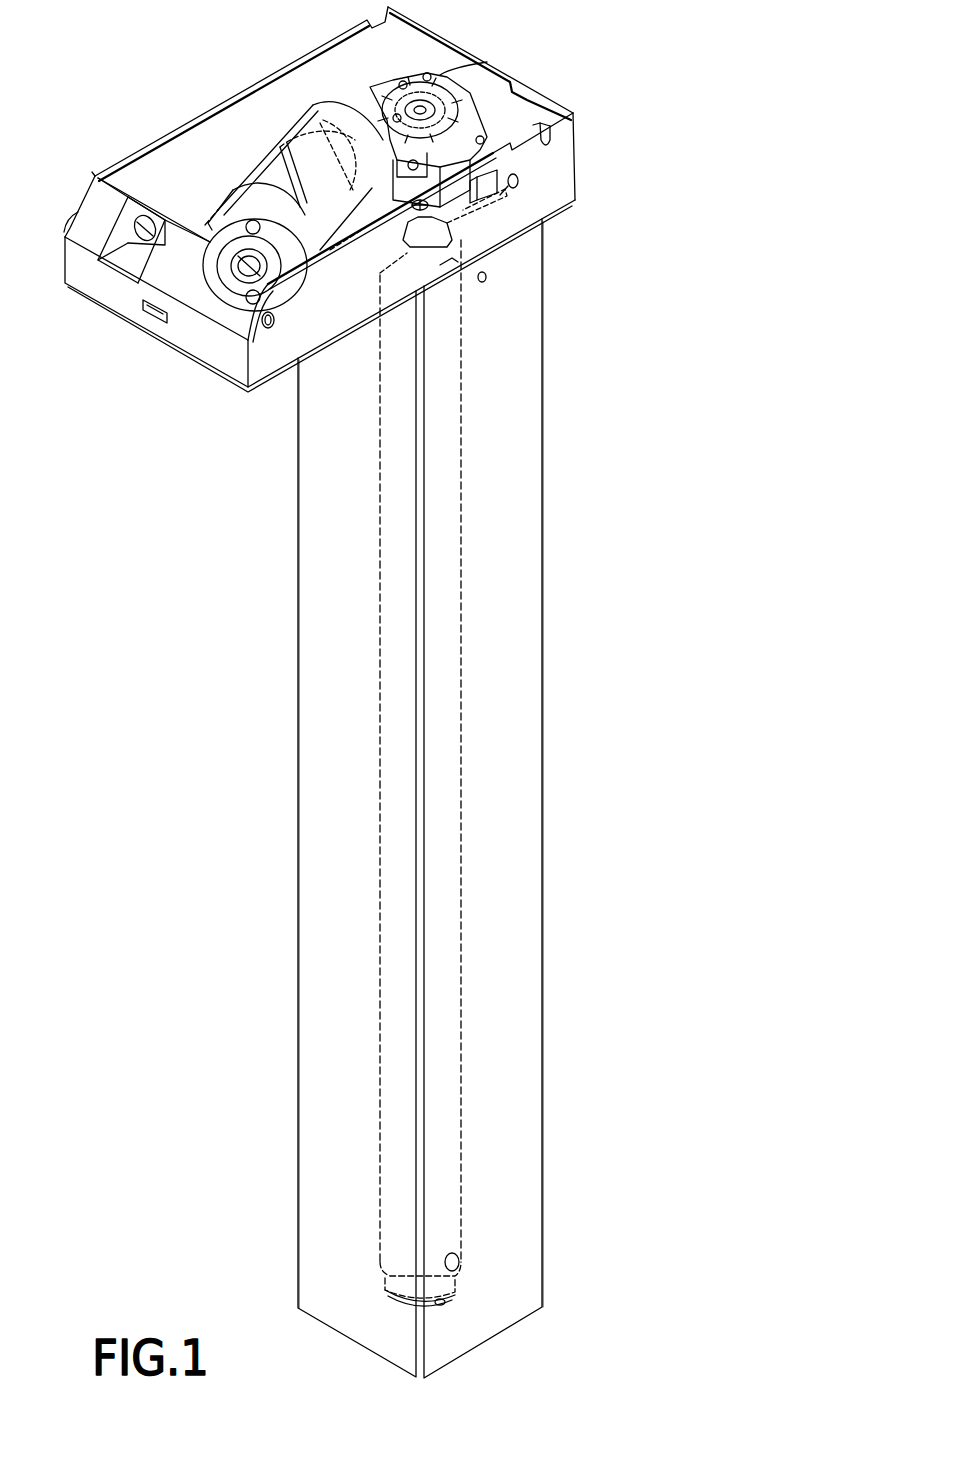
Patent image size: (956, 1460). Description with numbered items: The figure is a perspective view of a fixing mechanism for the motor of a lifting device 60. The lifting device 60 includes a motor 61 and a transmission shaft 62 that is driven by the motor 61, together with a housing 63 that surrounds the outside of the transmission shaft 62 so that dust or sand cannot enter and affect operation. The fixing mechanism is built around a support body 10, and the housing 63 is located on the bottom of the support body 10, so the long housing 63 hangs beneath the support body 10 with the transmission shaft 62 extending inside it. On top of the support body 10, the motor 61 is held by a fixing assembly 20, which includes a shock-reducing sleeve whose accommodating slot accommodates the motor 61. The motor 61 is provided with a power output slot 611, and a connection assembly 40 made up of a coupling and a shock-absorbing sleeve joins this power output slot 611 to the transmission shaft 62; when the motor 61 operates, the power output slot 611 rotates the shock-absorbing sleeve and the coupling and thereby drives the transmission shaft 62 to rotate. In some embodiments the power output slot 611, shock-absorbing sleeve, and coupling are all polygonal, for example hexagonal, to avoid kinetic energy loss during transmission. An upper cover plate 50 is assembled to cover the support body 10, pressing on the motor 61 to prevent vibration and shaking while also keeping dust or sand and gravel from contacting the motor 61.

The support body 10 is at (560, 163).
The fixing assembly 20 is at (243, 160).
The connection assembly 40 is at (420, 102).
The upper cover plate 50 is at (173, 173).
The lifting device 60 is at (476, 798).
The motor 61 is at (318, 140).
The power output slot 611 is at (487, 61).
The transmission shaft 62 is at (450, 553).
The housing 63 is at (523, 673).